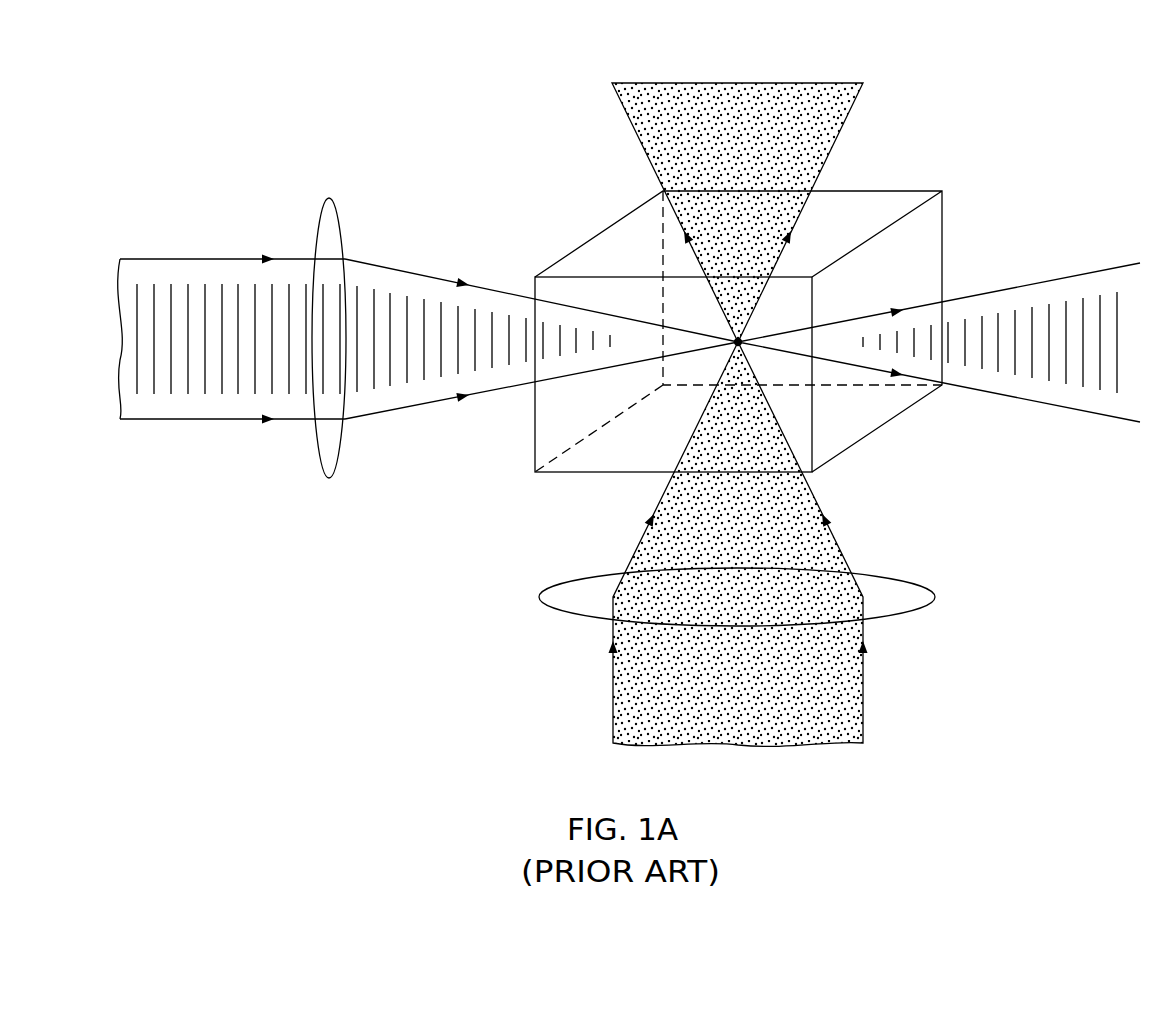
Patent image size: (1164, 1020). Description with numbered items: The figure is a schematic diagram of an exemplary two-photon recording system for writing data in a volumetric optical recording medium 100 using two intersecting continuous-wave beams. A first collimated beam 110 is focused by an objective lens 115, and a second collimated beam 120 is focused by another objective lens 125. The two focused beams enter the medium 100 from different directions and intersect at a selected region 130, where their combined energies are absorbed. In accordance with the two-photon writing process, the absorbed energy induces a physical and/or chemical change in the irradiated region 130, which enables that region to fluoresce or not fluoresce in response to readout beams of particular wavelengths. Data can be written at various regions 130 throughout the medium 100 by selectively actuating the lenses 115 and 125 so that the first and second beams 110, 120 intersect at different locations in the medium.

The volumetric optical recording medium 100 is at (877, 207).
The first collimated beam 110 is at (248, 324).
The objective lens 115 is at (328, 477).
The second collimated beam 120 is at (840, 678).
The objective lens 125 is at (895, 580).
The selected region 130 is at (738, 343).